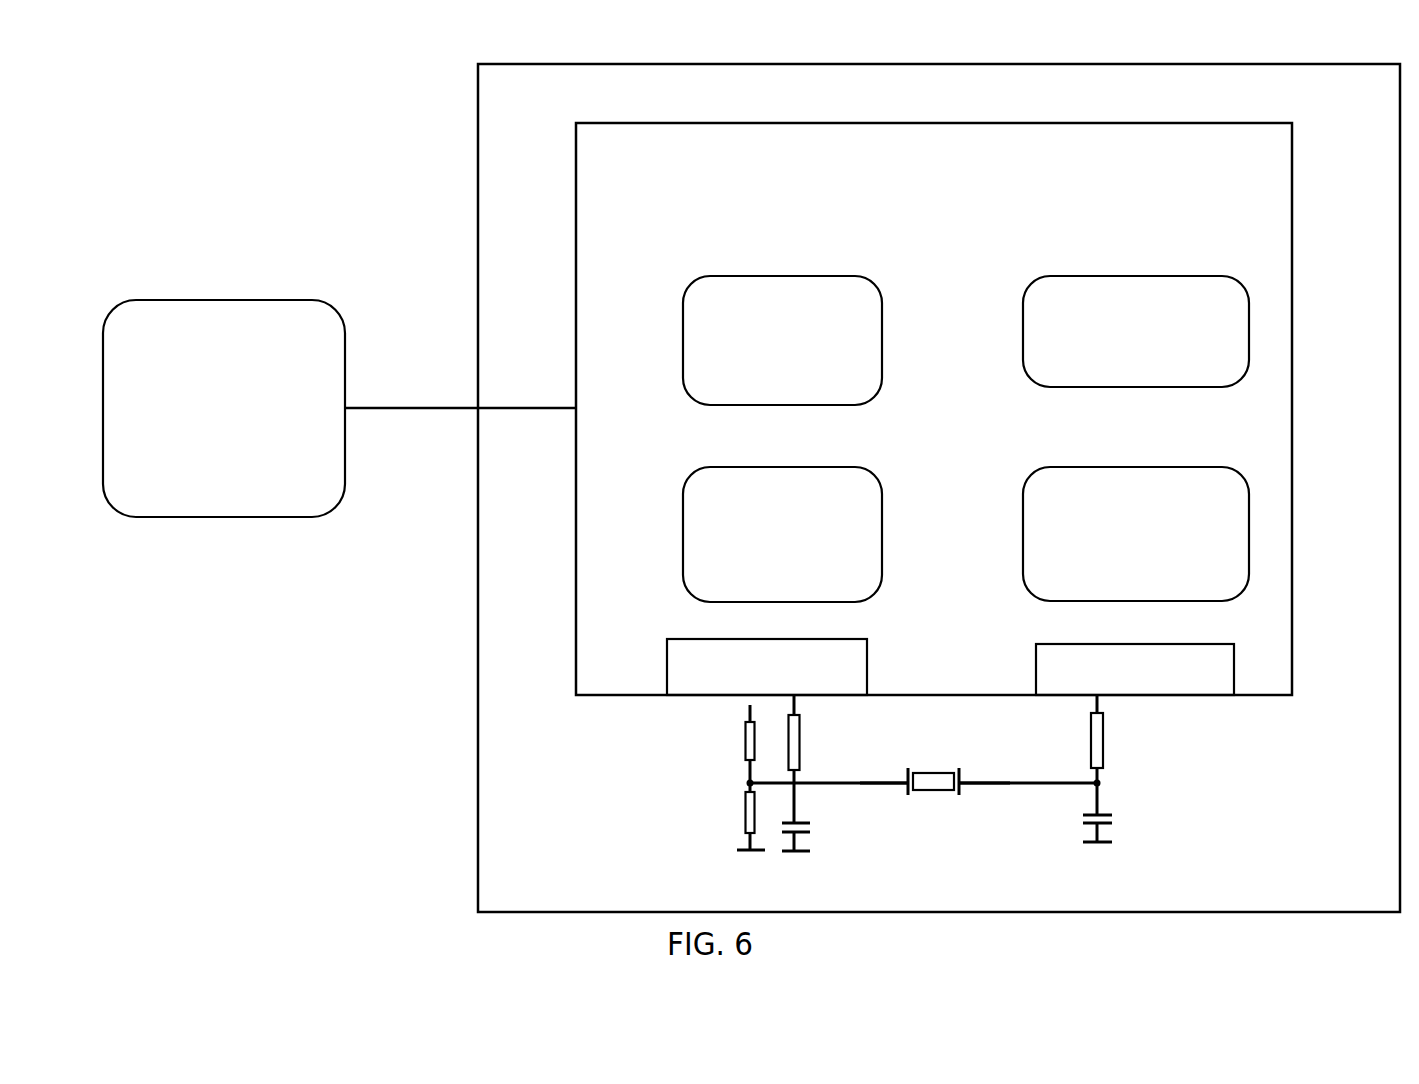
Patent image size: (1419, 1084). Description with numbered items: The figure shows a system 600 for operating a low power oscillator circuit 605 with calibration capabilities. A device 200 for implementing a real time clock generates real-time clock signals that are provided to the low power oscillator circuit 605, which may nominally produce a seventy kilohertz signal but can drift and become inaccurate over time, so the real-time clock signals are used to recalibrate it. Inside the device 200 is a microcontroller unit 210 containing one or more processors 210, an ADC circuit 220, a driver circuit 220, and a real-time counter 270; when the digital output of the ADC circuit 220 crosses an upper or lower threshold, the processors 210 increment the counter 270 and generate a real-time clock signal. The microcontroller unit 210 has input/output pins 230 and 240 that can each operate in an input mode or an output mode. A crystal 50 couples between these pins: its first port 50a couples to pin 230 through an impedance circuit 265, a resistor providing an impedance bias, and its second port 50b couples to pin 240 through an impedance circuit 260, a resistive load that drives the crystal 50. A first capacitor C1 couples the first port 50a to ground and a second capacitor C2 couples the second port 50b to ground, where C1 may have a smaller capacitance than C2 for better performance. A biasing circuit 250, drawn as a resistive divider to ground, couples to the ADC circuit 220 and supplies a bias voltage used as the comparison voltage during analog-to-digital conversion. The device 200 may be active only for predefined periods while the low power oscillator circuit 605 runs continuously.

The system 600 is at (339, 226).
The low power oscillator circuit 605 is at (224, 408).
The device 200 is at (939, 488).
The microcontroller unit 210 is at (934, 409).
The ADC circuit 220 is at (782, 439).
The real-time counter 270 is at (1136, 331).
The input/output pin 230 is at (767, 667).
The input/output pin 240 is at (1135, 669).
The biasing circuit 250 is at (738, 720).
The impedance circuit 265 is at (800, 771).
The impedance circuit 260 is at (1106, 702).
The crystal 50 is at (933, 794).
The first port 50a is at (895, 782).
The second port 50b is at (988, 782).
The first capacitor C1 is at (811, 833).
The second capacitor C2 is at (1115, 826).